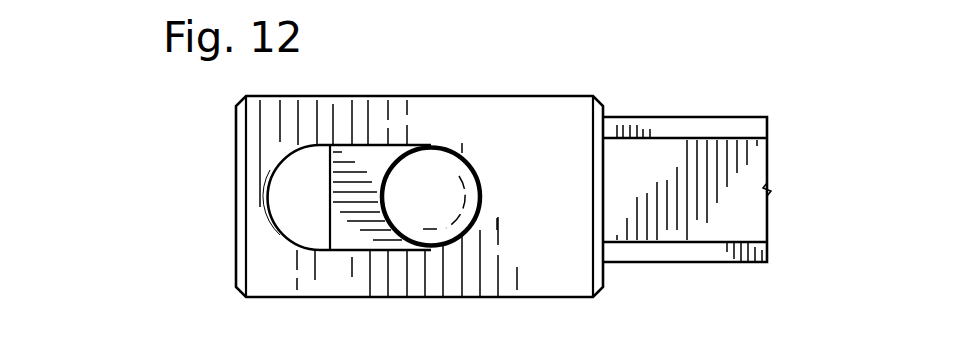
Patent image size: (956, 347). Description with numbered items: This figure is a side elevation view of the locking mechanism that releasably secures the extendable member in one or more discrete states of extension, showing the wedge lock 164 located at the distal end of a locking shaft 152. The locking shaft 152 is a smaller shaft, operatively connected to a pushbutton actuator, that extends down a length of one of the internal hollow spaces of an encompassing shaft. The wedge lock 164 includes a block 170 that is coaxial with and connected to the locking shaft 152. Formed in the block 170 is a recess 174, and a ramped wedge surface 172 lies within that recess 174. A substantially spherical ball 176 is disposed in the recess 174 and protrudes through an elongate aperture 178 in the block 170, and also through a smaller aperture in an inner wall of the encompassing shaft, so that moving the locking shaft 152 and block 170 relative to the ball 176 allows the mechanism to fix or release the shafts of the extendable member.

The locking shaft 152 is at (755, 173).
The wedge lock 164 is at (138, 198).
The block 170 is at (551, 144).
The ramped wedge surface 172 is at (379, 158).
The recess 174 is at (320, 204).
The ball 176 is at (448, 207).
The elongate aperture 178 is at (293, 231).